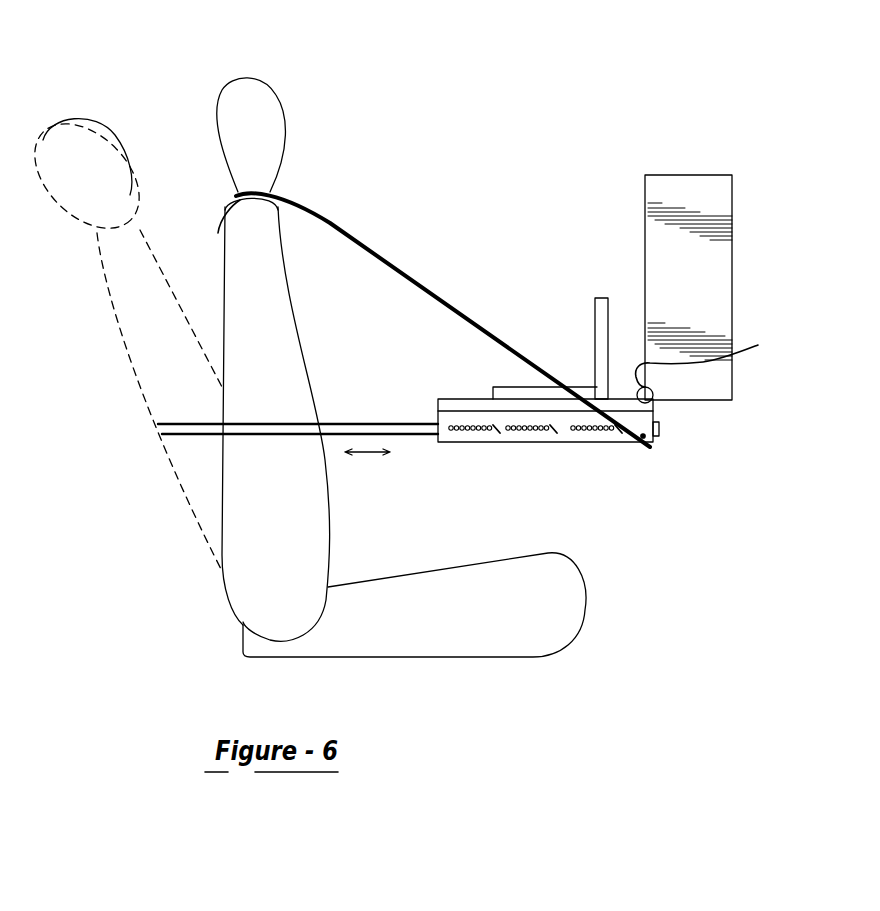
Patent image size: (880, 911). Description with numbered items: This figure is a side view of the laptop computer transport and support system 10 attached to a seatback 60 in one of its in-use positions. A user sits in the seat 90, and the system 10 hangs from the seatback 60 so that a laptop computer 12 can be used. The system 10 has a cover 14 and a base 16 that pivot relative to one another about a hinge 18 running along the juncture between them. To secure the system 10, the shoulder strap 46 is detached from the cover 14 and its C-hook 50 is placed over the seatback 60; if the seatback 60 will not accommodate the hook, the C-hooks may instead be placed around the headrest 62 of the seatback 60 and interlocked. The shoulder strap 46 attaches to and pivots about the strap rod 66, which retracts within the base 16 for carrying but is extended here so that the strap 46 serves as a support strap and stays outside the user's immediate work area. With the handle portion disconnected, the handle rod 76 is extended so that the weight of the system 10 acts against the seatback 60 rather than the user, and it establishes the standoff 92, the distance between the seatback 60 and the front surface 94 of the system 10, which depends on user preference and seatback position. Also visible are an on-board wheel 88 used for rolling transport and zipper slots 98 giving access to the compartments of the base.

The laptop computer transport and support system 10 is at (714, 415).
The laptop computer 12 is at (595, 325).
The cover 14 is at (729, 269).
The base 16 is at (522, 437).
The hinge 18 is at (708, 365).
The shoulder strap 46 is at (418, 282).
The C-hook 50 is at (218, 232).
The seatback 60 is at (282, 334).
The headrest 62 is at (220, 88).
The strap rod 66 is at (649, 446).
The handle rod 76 is at (373, 425).
The wheel 88 is at (659, 430).
The seat 90 is at (457, 577).
The standoff 92 is at (367, 466).
The front surface 94 is at (435, 418).
The zipper slots 98 is at (477, 433).